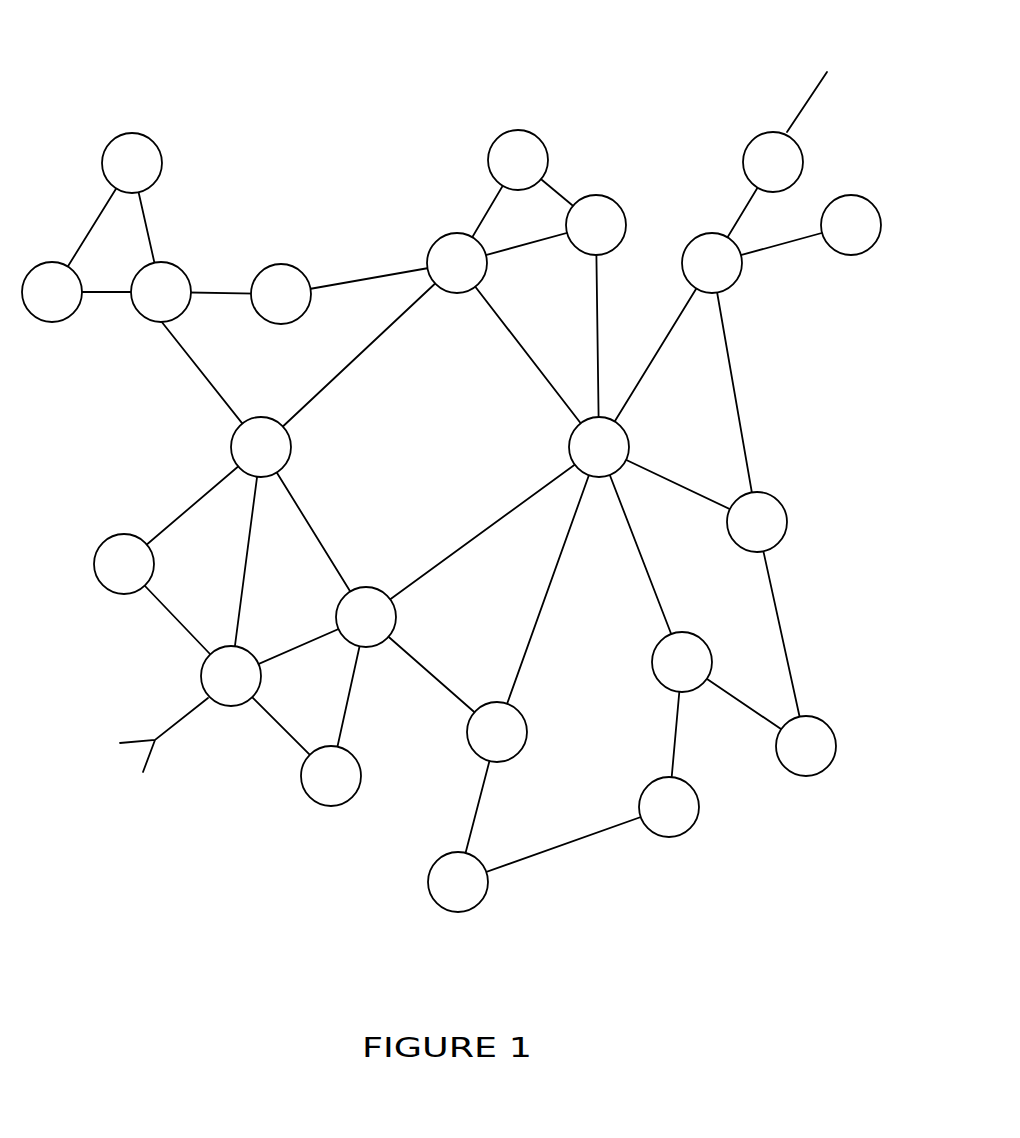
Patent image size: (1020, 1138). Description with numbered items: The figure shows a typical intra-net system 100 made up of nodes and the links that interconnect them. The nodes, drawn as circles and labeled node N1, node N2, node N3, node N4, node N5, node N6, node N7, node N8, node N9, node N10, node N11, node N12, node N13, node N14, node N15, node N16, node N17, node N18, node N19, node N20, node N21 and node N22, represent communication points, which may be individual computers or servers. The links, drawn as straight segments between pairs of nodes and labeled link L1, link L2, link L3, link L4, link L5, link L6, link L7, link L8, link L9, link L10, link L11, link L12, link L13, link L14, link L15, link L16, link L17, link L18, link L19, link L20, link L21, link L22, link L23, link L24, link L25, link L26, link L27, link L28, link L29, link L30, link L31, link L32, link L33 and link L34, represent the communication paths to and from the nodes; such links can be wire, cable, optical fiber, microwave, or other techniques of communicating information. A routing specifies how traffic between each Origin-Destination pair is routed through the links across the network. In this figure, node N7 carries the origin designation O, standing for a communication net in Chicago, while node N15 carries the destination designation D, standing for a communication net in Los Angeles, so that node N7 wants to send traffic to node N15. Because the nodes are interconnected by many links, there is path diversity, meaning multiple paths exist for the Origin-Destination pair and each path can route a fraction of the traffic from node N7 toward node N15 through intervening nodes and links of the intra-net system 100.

The intra-net system 100 is at (375, 95).
The node N1 is at (132, 163).
The node N2 is at (52, 292).
The node N3 is at (161, 292).
The node N4 is at (281, 294).
The node N5 is at (261, 447).
The node N6 is at (124, 564).
The origin node N7 is at (231, 676).
The node N8 is at (331, 776).
The node N9 is at (458, 882).
The node N10 is at (669, 807).
The node N11 is at (806, 746).
The node N12 is at (682, 662).
The node N13 is at (757, 522).
The node N14 is at (851, 225).
The destination node N15 is at (773, 162).
The node N16 is at (712, 263).
The node N17 is at (596, 225).
The node N18 is at (518, 160).
The node N19 is at (457, 263).
The node N20 is at (366, 617).
The node N21 is at (497, 732).
The node N22 is at (599, 447).
The link L1 is at (90, 225).
The link L2 is at (152, 227).
The link L3 is at (110, 295).
The link L4 is at (220, 292).
The link L5 is at (355, 272).
The link L6 is at (475, 207).
The link L7 is at (563, 188).
The link L8 is at (528, 235).
The link L9 is at (200, 373).
The link L10 is at (340, 370).
The link L11 is at (520, 342).
The link L12 is at (597, 317).
The link L13 is at (667, 338).
The link L14 is at (732, 207).
The link L15 is at (812, 97).
The link L16 is at (798, 242).
The link L17 is at (735, 375).
The link L18 is at (192, 502).
The link L19 is at (242, 562).
The link L20 is at (317, 530).
The link L21 is at (522, 502).
The link L22 is at (538, 612).
The link L23 is at (627, 527).
The link L24 is at (683, 485).
The link L25 is at (175, 623).
The link L26 is at (298, 640).
The link L27 is at (278, 730).
The link L28 is at (345, 697).
The link L29 is at (435, 672).
The link L30 is at (478, 808).
The link L31 is at (563, 842).
The link L32 is at (675, 735).
The link L33 is at (747, 705).
The link L34 is at (785, 636).
The origin O is at (159, 738).
The destination D is at (828, 55).